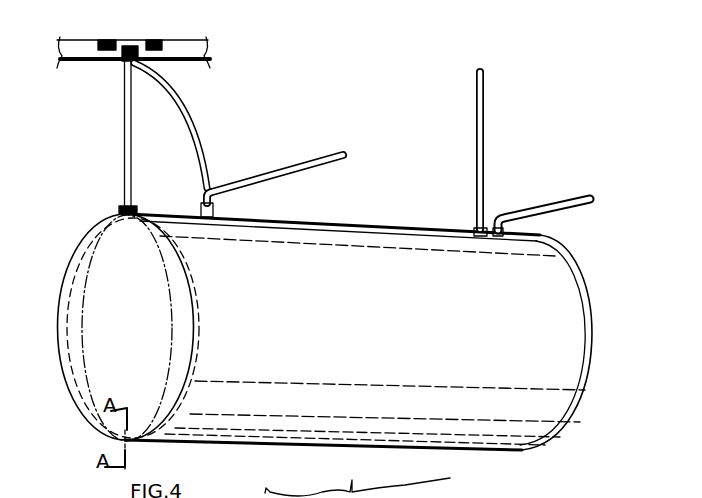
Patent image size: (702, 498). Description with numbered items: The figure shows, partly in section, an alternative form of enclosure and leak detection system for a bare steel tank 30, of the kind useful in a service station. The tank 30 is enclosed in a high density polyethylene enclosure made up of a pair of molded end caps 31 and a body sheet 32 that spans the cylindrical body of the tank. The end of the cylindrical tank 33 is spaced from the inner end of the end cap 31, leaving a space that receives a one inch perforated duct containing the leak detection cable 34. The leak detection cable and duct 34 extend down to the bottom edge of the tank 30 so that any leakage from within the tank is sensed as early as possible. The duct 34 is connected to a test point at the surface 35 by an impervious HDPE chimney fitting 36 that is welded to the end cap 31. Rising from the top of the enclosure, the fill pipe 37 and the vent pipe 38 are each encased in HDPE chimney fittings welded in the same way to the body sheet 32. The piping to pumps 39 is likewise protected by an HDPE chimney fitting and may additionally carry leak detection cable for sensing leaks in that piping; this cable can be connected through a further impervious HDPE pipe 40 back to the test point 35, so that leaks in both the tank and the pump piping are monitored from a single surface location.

The tank 30 is at (316, 324).
The molded end cap 31 is at (66, 274).
The body sheet 32 is at (282, 220).
The end of the cylindrical tank 33 is at (196, 366).
The leak detection cable and duct 34 is at (168, 372).
The test point at the surface 35 is at (130, 47).
The impervious HDPE chimney fitting 36 is at (112, 137).
The fill pipe 37 is at (485, 181).
The vent pipe 38 is at (560, 207).
The piping to pumps 39 is at (280, 175).
The impervious HDPE pipe 40 is at (207, 154).